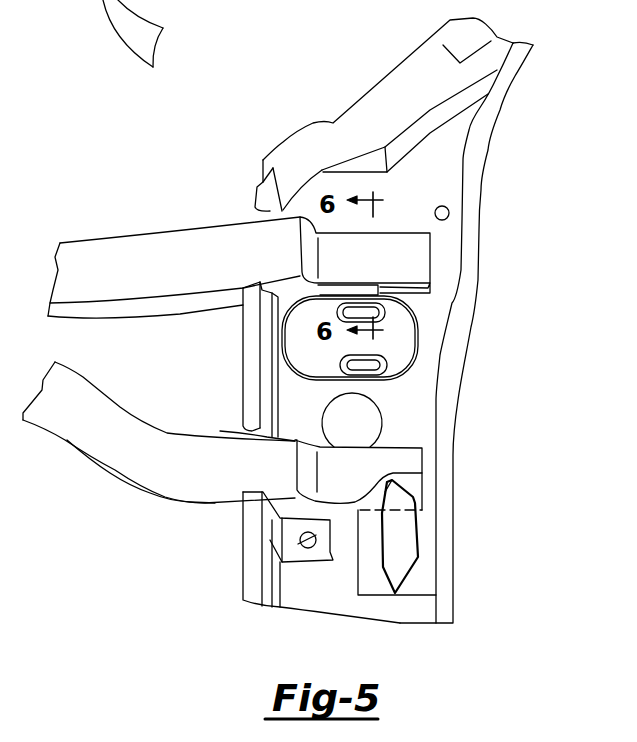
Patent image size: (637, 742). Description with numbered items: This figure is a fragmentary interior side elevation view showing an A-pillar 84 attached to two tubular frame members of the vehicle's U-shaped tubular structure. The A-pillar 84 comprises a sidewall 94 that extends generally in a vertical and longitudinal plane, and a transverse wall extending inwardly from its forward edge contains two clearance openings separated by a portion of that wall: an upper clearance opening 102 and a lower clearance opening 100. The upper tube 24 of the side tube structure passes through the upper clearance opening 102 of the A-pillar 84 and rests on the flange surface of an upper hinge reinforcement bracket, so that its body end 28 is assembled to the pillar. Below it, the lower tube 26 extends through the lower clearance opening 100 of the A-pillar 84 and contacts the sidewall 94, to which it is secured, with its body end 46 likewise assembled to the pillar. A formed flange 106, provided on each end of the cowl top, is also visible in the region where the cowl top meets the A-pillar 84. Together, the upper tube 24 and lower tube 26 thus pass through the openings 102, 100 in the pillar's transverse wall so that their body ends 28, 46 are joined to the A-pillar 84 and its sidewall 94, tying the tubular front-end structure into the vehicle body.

The upper tube 24 is at (105, 263).
The lower tube 26 is at (198, 475).
The body end 28 is at (360, 270).
The body end 46 is at (362, 482).
The A-pillar 84 is at (462, 312).
The sidewall 94 is at (425, 420).
The lower clearance opening 100 is at (250, 431).
The upper clearance opening 102 is at (258, 217).
The formed flange 106 is at (378, 287).